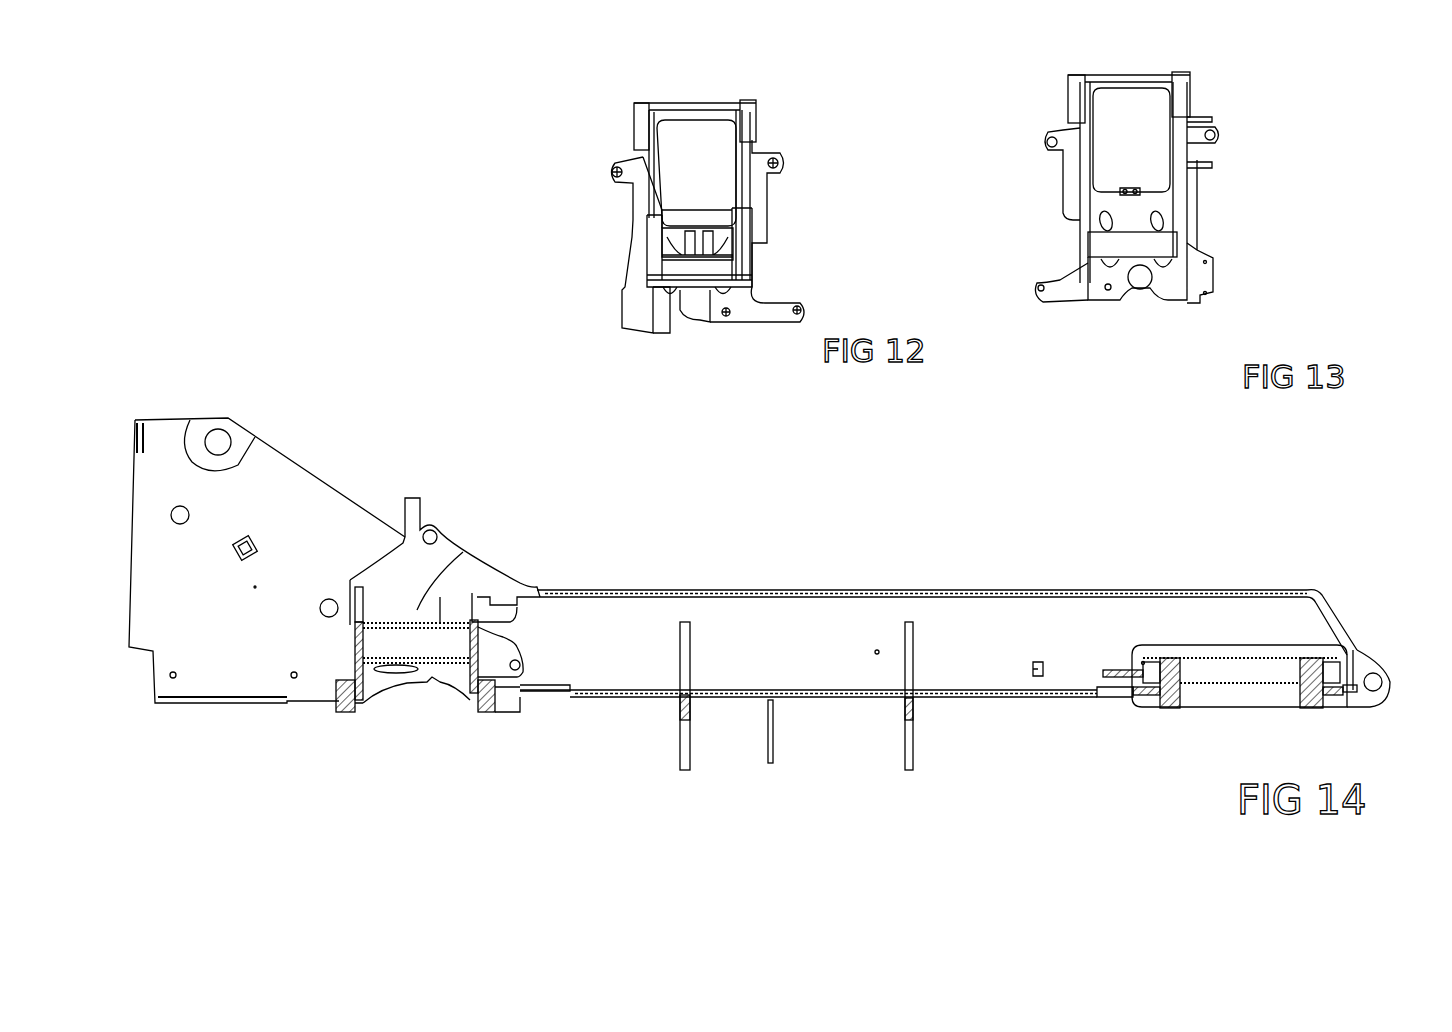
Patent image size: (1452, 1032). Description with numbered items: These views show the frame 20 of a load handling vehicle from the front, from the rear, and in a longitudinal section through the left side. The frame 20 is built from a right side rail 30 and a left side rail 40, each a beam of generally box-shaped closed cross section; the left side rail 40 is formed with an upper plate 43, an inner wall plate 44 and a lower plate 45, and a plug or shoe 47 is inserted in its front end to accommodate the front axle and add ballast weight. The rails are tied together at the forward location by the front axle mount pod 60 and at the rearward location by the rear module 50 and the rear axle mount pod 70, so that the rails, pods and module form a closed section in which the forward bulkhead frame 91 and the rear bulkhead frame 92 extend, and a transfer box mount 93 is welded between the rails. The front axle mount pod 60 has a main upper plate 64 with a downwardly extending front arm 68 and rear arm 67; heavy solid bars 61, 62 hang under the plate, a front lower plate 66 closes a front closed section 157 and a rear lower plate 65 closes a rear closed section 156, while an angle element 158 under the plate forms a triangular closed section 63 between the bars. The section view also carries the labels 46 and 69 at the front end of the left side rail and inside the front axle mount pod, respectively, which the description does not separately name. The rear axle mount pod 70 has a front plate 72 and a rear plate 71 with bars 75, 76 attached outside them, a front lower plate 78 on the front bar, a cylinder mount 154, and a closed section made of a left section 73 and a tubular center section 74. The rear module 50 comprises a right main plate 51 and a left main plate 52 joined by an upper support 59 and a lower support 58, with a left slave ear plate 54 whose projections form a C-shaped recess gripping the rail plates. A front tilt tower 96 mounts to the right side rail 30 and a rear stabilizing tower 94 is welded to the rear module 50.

In FIG. 12, the frame 20 is at (690, 93).
In FIG. 13, the frame 20 is at (1127, 62).
In FIG. 14, the frame 20 is at (249, 410).
In FIG. 12, the right side rail 30 is at (650, 227).
In FIG. 12, the left side rail 40 is at (754, 254).
In FIG. 14, the left side rail 40 is at (920, 590).
In FIG. 14, the left side rail upper plate 43 is at (1093, 592).
In FIG. 14, the left side rail inner wall plate 44 is at (802, 622).
In FIG. 14, the left side rail lower plate 45 is at (1075, 695).
In FIG. 14, the end bracket upper arm 46 is at (1312, 590).
In FIG. 14, the left side rail plug or shoe 47 is at (1363, 660).
In FIG. 13, the rear module 50 is at (1185, 98).
In FIG. 14, the rear module 50 is at (272, 462).
In FIG. 13, the rear module right main plate 51 is at (1152, 77).
In FIG. 14, the rear module left main plate 52 is at (335, 510).
In FIG. 14, the rear module left slave ear plate 54 is at (447, 543).
In FIG. 13, the rear module lower support 58 is at (1117, 242).
In FIG. 14, the rear module lower support 58 is at (203, 697).
In FIG. 12, the rear module upper support 59 is at (720, 108).
In FIG. 14, the rear module upper support 59 is at (160, 418).
In FIG. 12, the front axle mount pod 60 is at (702, 263).
In FIG. 14, the front axle mount pod 60 is at (1223, 657).
In FIG. 14, the rear bar 61 is at (1163, 710).
In FIG. 14, the front bar 62 is at (1317, 710).
In FIG. 14, the triangular closed section 63 is at (1230, 673).
In FIG. 14, the main upper plate 64 is at (1187, 655).
In FIG. 14, the rear lower plate 65 is at (1143, 703).
In FIG. 14, the front lower plate 66 is at (1343, 708).
In FIG. 14, the rear arm 67 is at (1140, 667).
In FIG. 14, the front arm 68 is at (1340, 675).
In FIG. 14, the connector right body 69 is at (1330, 650).
In FIG. 12, the rear axle mount pod 70 is at (705, 227).
In FIG. 13, the rear axle mount pod 70 is at (1142, 207).
In FIG. 14, the rear axle mount pod 70 is at (412, 610).
In FIG. 14, the rear plate 71 is at (354, 647).
In FIG. 14, the front plate 72 is at (479, 648).
In FIG. 14, the left section 73 is at (441, 668).
In FIG. 14, the center section 74 is at (393, 607).
In FIG. 14, the rear bar 75 is at (342, 712).
In FIG. 14, the front bar 76 is at (488, 712).
In FIG. 14, the front lower plate 78 is at (537, 695).
In FIG. 12, the forward bulkhead frame 91 is at (760, 308).
In FIG. 14, the forward bulkhead frame 91 is at (913, 622).
In FIG. 13, the rear bulkhead frame 92 is at (1057, 287).
In FIG. 14, the rear bulkhead frame 92 is at (687, 623).
In FIG. 12, the transfer box mount 93 is at (622, 295).
In FIG. 13, the transfer box mount 93 is at (1208, 263).
In FIG. 14, the transfer box mount 93 is at (773, 757).
In FIG. 12, the rear stabilizing tower 94 is at (755, 190).
In FIG. 13, the rear stabilizing tower 94 is at (1067, 157).
In FIG. 14, the rear stabilizing tower 94 is at (412, 498).
In FIG. 12, the front tilt tower 96 is at (636, 187).
In FIG. 13, the front tilt tower 96 is at (1195, 150).
In FIG. 14, the mount for cylinder 154 is at (522, 665).
In FIG. 14, the rear closed section 156 is at (1143, 663).
In FIG. 14, the front closed section 157 is at (1352, 653).
In FIG. 14, the angle element 158 is at (1237, 683).